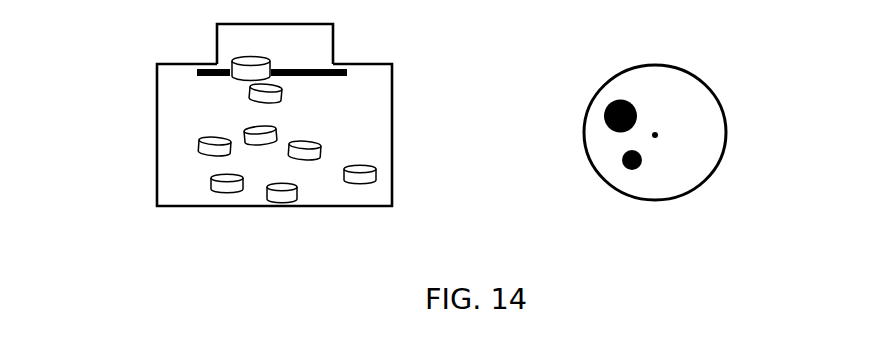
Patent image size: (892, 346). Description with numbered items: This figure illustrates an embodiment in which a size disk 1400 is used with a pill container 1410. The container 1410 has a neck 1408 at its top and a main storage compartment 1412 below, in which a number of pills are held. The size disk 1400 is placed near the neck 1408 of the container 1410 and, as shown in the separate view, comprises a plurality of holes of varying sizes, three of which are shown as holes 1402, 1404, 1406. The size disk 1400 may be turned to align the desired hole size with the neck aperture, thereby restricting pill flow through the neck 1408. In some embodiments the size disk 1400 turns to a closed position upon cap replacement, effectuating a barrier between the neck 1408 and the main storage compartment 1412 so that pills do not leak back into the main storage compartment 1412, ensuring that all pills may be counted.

The size disk 1400 is at (336, 64).
The hole 1402 is at (604, 122).
The hole 1404 is at (625, 172).
The hole 1406 is at (657, 138).
The neck 1408 is at (217, 40).
The container 1410 is at (143, 159).
The main storage compartment 1412 is at (166, 108).